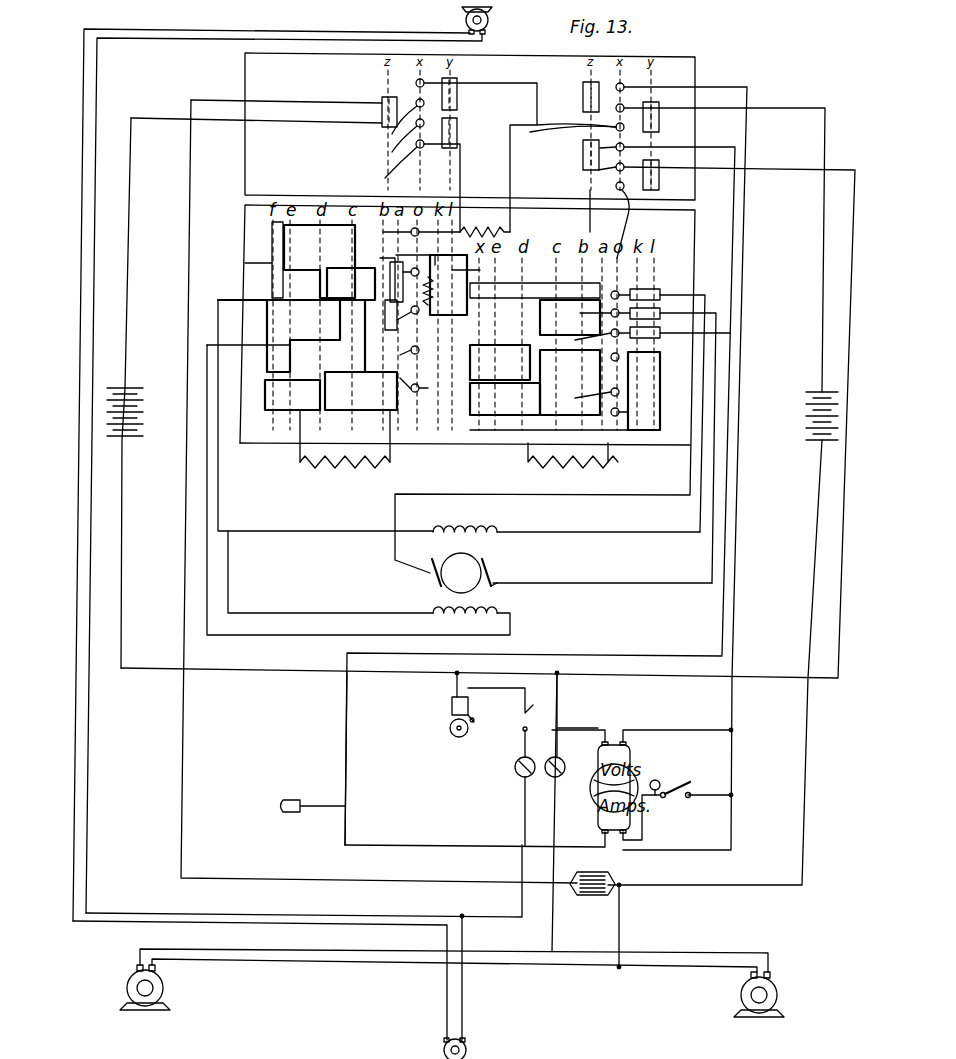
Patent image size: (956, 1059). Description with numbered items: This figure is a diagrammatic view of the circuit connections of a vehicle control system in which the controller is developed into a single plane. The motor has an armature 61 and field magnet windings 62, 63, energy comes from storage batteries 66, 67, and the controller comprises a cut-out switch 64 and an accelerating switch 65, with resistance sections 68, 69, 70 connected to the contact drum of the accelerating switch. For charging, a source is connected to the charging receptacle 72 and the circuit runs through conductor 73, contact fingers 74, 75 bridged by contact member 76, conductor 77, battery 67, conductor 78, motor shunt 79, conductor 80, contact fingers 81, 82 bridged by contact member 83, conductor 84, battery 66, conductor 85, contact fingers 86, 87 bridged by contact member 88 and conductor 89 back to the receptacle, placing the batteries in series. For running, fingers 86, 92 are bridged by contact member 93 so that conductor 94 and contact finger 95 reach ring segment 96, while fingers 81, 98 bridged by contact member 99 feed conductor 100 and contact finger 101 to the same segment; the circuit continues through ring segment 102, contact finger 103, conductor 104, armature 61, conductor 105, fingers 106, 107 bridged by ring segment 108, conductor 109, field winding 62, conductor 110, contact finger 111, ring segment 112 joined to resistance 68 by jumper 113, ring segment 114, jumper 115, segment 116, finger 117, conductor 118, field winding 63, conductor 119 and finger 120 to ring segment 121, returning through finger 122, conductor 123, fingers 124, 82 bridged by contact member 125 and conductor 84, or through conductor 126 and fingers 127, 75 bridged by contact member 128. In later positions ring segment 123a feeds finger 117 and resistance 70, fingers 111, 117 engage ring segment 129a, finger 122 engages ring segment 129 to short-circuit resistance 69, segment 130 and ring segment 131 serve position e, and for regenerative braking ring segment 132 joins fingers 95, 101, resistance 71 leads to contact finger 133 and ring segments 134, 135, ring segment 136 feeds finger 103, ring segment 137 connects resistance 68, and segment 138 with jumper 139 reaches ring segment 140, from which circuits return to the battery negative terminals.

The armature 61 is at (464, 573).
The field magnet winding 62 is at (470, 525).
The field magnet winding 63 is at (492, 610).
The cut-out switch 64 is at (322, 81).
The accelerating switch 65 is at (260, 436).
The storage battery 66 is at (134, 380).
The storage battery 67 is at (800, 440).
The resistance section 68 is at (435, 300).
The resistance section 69 is at (360, 468).
The resistance section 70 is at (485, 221).
The resistance 71 is at (594, 470).
The charging receptacle 72 is at (296, 796).
The conductor 73 is at (420, 845).
The contact finger 74 is at (627, 87).
The contact finger 75 is at (628, 107).
The contact member 76 is at (582, 90).
The conductor 77 is at (772, 115).
The conductor 78 is at (806, 606).
The motor shunt 79 is at (586, 898).
The conductor 80 is at (433, 882).
The contact finger 81 is at (389, 122).
The contact finger 82 is at (389, 141).
The contact member 83 is at (382, 98).
The conductor 84 is at (131, 192).
The conductor 85 is at (663, 676).
The contact finger 86 is at (598, 170).
The contact finger 87 is at (583, 156).
The contact member 88 is at (582, 147).
The conductor 89 is at (548, 655).
The contact finger 92 is at (629, 220).
The contact member 93 is at (658, 175).
The conductor 94 is at (607, 218).
The contact finger 95 is at (580, 402).
The ring segment 96 is at (570, 382).
The contact finger 98 is at (408, 81).
The contact member 99 is at (460, 82).
The conductor 100 is at (537, 185).
The contact finger 101 is at (620, 392).
The ring segment 102 is at (562, 296).
The contact finger 103 is at (622, 262).
The conductor 104 is at (712, 564).
The conductor 105 is at (640, 495).
The contact finger 106 is at (580, 348).
The contact finger 107 is at (580, 316).
The ring segment 108 is at (540, 310).
The conductor 109 is at (700, 521).
The conductor 110 is at (325, 416).
The contact finger 111 is at (400, 378).
The ring segment 112 is at (400, 355).
The jumper 113 is at (400, 322).
The ring segment 114 is at (515, 285).
The jumper 115 is at (392, 258).
The segment 116 is at (385, 313).
The contact finger 117 is at (419, 270).
The conductor 118 is at (295, 636).
The conductor 119 is at (232, 570).
The contact finger 120 is at (418, 456).
The ring segment 121 is at (361, 381).
The contact finger 122 is at (417, 392).
The conductor 123 is at (460, 166).
The ring segment 123a is at (351, 284).
The contact finger 124 is at (383, 191).
The contact member 125 is at (458, 130).
The conductor 126 is at (510, 147).
The contact finger 127 is at (557, 283).
The contact member 128 is at (565, 284).
The ring segment 129 is at (263, 403).
The ring segment 129a is at (279, 336).
The segment 130 is at (319, 261).
The ring segment 131 is at (270, 262).
The ring segment 132 is at (648, 455).
The contact finger 133 is at (612, 414).
The ring segment 134 is at (660, 443).
The ring segment 135 is at (660, 290).
The ring segment 136 is at (660, 289).
The ring segment 137 is at (500, 362).
The segment 138 is at (660, 312).
The jumper 139 is at (680, 455).
The ring segment 140 is at (505, 399).